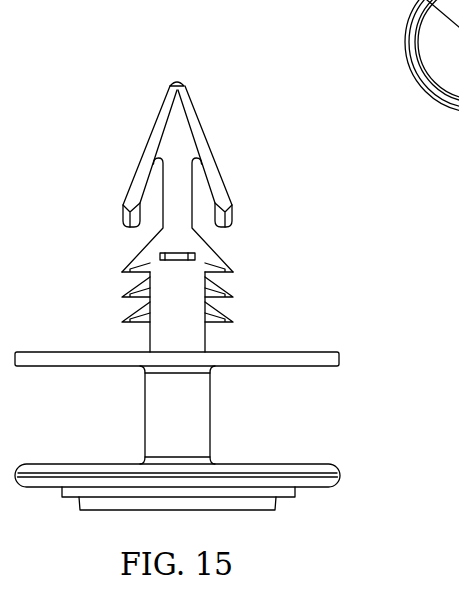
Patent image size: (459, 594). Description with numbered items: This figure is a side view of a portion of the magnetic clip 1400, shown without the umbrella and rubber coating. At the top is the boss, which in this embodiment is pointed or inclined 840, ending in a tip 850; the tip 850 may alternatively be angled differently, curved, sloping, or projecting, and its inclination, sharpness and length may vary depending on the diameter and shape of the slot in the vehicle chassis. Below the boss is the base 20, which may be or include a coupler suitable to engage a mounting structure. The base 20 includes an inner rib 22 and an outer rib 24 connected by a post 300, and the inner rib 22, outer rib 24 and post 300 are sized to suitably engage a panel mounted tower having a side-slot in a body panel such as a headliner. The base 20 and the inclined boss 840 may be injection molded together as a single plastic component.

The magnetic clip 1400 is at (87, 124).
The tip 850 is at (176, 80).
The inclined boss 840 is at (197, 244).
The base 20 is at (387, 337).
The inner rib 22 is at (333, 360).
The post 300 is at (200, 417).
The outer rib 24 is at (333, 476).